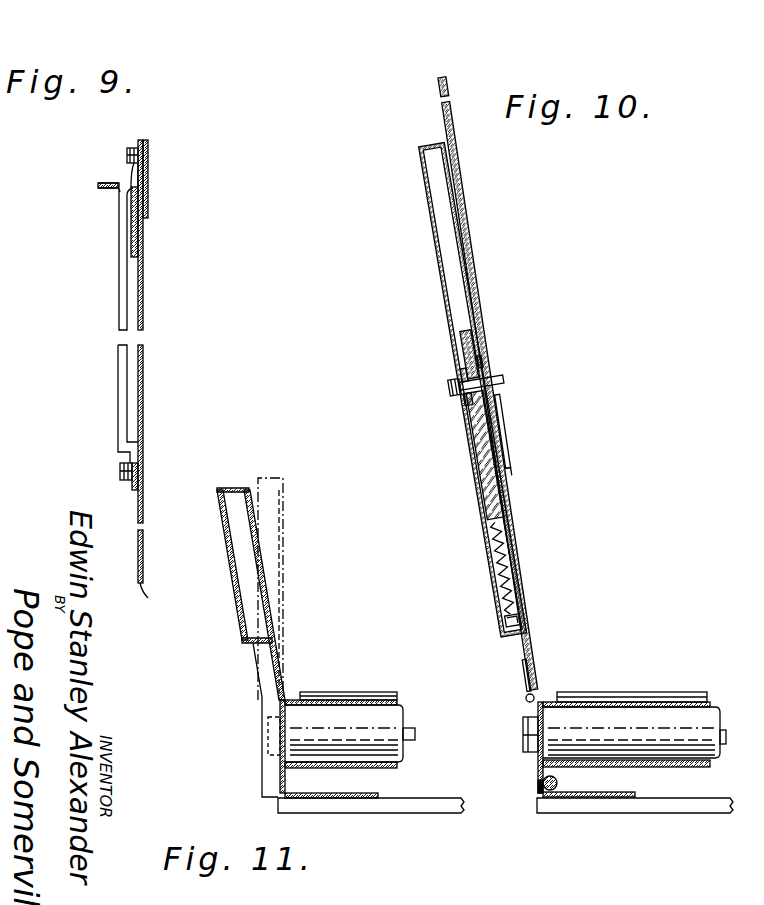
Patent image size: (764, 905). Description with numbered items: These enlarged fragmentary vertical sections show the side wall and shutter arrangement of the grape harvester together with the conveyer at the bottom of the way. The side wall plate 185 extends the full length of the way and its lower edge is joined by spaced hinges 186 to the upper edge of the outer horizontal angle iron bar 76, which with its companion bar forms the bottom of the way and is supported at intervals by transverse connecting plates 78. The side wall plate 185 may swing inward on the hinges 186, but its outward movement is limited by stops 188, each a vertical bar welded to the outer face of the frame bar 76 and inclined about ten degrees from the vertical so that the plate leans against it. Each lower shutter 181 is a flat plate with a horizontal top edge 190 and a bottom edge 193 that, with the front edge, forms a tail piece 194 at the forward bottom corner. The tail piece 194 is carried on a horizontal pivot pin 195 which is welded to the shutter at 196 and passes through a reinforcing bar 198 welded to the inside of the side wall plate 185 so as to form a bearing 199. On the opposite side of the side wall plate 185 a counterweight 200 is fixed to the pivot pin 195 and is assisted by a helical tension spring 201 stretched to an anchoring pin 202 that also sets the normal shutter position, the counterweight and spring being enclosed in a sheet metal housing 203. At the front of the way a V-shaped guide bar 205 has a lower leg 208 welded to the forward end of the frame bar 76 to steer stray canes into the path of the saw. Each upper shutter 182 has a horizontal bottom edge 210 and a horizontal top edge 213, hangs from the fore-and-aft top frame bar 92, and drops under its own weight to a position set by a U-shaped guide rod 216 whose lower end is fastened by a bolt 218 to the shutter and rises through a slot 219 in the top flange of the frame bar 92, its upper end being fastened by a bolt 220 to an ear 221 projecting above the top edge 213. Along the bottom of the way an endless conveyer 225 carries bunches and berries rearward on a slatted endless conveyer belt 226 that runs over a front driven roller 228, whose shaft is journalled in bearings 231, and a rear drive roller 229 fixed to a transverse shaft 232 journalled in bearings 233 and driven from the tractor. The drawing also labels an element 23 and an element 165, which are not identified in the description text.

In FIG. 10, the pin 23 is at (724, 732).
In FIG. 10, the horizontal angle iron bar 76 is at (597, 798).
In FIG. 11, the horizontal angle iron bar 76 is at (285, 795).
In FIG. 10, the transverse connecting plate 78 is at (703, 806).
In FIG. 11, the transverse connecting plate 78 is at (395, 808).
In FIG. 9, the fore-and-aft top frame bar 92 is at (98, 186).
In FIG. 10, the spring housing flange 165 is at (516, 545).
In FIG. 10, the lower shutter 181 is at (467, 215).
In FIG. 9, the upper shutter 182 is at (145, 315).
In FIG. 11, the side wall plate 185 is at (247, 484).
In FIG. 10, the hinge 186 is at (524, 672).
In FIG. 11, the stop 188 is at (258, 681).
In FIG. 10, the horizontal top edge 190 is at (436, 80).
In FIG. 10, the bottom edge 193 is at (510, 463).
In FIG. 10, the tail piece 194 is at (510, 447).
In FIG. 10, the pivot pin 195 is at (503, 383).
In FIG. 10, the weld 196 is at (494, 372).
In FIG. 10, the reinforcing bar 198 is at (503, 397).
In FIG. 10, the bearing 199 is at (497, 366).
In FIG. 10, the counterweight 200 is at (482, 480).
In FIG. 10, the helical tension spring 201 is at (507, 573).
In FIG. 10, the anchoring pin 202 is at (523, 626).
In FIG. 10, the sheet metal housing 203 is at (425, 196).
In FIG. 10, the guide bar 205 is at (557, 782).
In FIG. 10, the lower leg 208 is at (540, 784).
In FIG. 9, the horizontal bottom edge 210 is at (148, 600).
In FIG. 9, the horizontal top edge 213 is at (140, 182).
In FIG. 9, the U-shaped guide rod 216 is at (119, 380).
In FIG. 9, the bolt 218 is at (120, 475).
In FIG. 9, the slot 219 is at (121, 198).
In FIG. 9, the bolt 220 is at (127, 157).
In FIG. 9, the ear 221 is at (150, 143).
In FIG. 10, the endless conveyer 225 is at (708, 692).
In FIG. 11, the endless conveyer 225 is at (398, 692).
In FIG. 10, the slatted endless conveyer belt 226 is at (650, 702).
In FIG. 11, the slatted endless conveyer belt 226 is at (365, 700).
In FIG. 10, the driven roller 228 is at (712, 715).
In FIG. 11, the drive roller 229 is at (405, 715).
In FIG. 10, the bearing 231 is at (528, 748).
In FIG. 11, the transverse shaft 232 is at (416, 734).
In FIG. 11, the bearing 233 is at (268, 755).